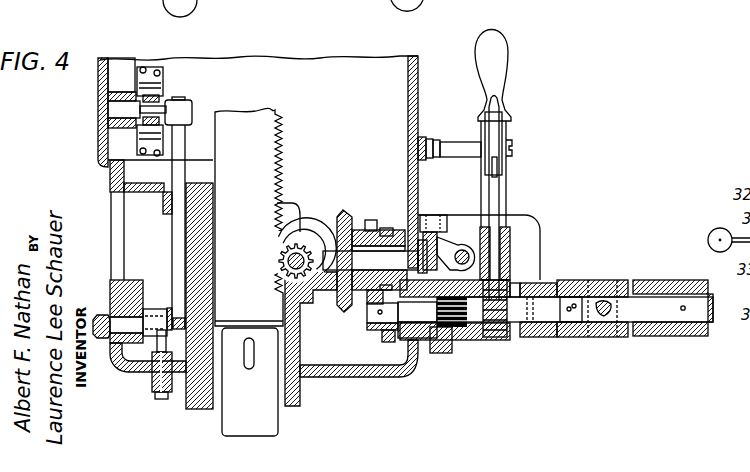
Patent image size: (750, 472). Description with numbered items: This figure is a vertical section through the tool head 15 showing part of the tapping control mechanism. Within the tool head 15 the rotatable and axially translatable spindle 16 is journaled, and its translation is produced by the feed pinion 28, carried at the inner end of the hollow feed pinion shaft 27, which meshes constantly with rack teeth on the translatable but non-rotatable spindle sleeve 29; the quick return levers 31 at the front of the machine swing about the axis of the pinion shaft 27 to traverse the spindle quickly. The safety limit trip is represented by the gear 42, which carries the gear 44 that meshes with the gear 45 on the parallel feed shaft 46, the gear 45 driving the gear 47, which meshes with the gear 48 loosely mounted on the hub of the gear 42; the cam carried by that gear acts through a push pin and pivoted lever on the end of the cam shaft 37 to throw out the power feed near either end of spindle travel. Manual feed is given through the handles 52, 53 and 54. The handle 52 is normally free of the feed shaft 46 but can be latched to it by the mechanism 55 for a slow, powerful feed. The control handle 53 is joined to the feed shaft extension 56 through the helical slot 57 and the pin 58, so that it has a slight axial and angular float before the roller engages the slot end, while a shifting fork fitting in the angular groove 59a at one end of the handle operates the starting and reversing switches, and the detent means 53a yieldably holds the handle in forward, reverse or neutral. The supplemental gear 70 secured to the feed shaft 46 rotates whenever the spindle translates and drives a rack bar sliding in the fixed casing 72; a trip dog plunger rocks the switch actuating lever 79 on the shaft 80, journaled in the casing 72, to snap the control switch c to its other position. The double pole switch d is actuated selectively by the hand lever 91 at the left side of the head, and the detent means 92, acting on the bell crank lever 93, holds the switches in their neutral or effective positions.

The tool head 15 is at (419, 88).
The spindle 16 is at (270, 425).
The feed pinion shaft 27 is at (282, 281).
The feed pinion 28 is at (300, 243).
The spindle sleeve 29 is at (258, 147).
The quick return levers 31 is at (719, 229).
The cam shaft 37 is at (280, 261).
The gear 42 is at (341, 217).
The gear 44 is at (388, 228).
The gear 45 is at (392, 339).
The feed shaft 46 is at (418, 352).
The gear 47 is at (373, 331).
The gear 48 is at (369, 220).
The handle 52 is at (497, 60).
The control handle 53 is at (613, 280).
The detent means 53a is at (567, 337).
The handle 54 is at (663, 282).
The latching mechanism 55 is at (510, 277).
The feed shaft extension 56 is at (665, 317).
The helical slot 57 is at (603, 317).
The pin 58 is at (578, 322).
The angular groove 59a is at (530, 285).
The supplemental gear 70 is at (438, 353).
The casing 72 is at (455, 355).
The switch actuating lever 79 is at (435, 250).
The shaft 80 is at (462, 250).
The hand lever 91 is at (100, 313).
The detent means 92 is at (130, 355).
The bell crank lever 93 is at (152, 309).
The control switch c is at (164, 82).
The double pole switch d is at (165, 135).